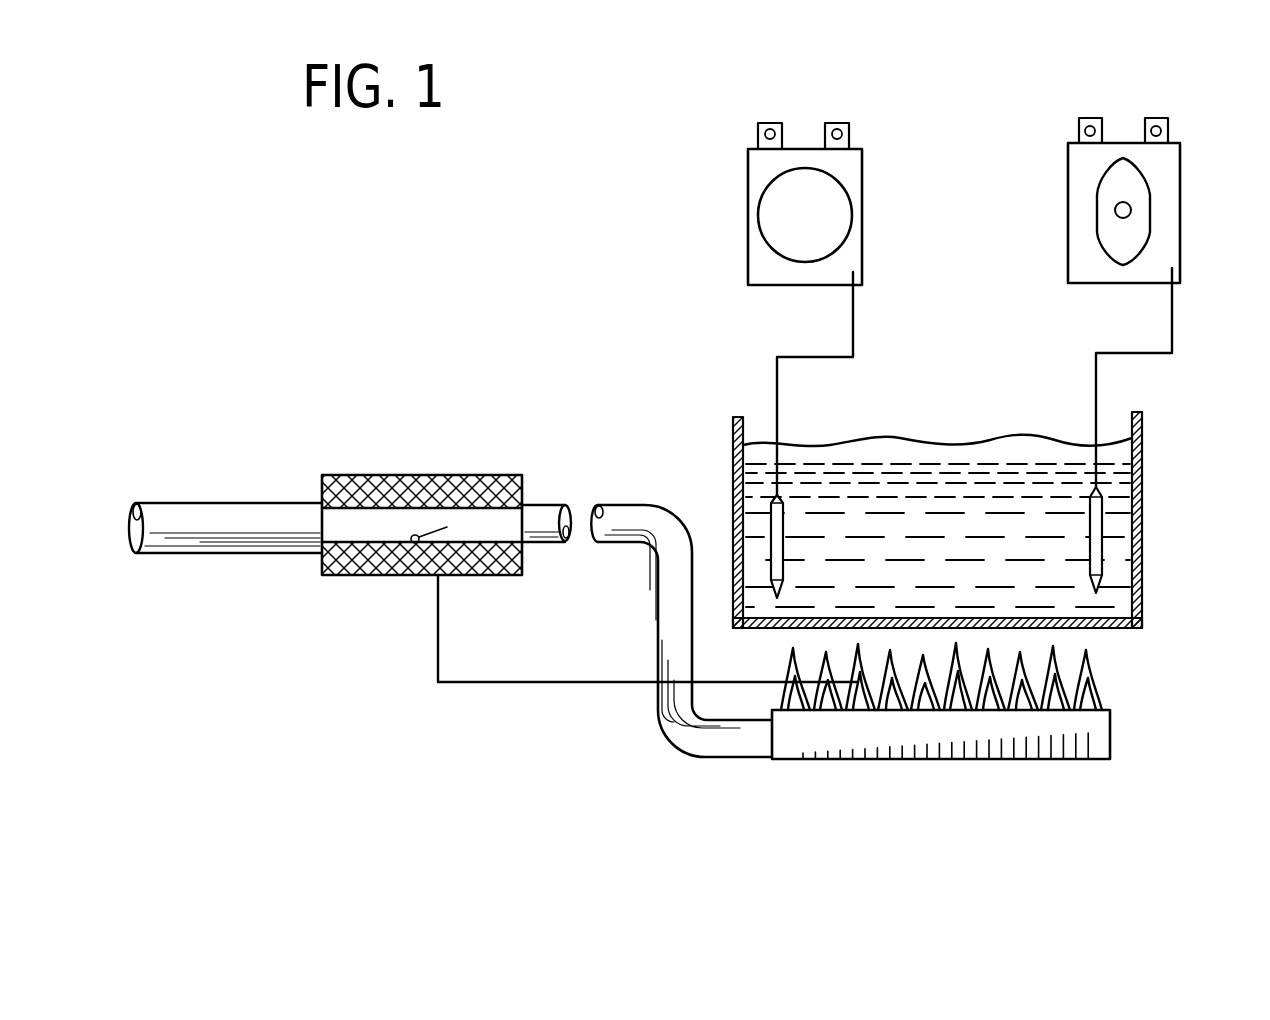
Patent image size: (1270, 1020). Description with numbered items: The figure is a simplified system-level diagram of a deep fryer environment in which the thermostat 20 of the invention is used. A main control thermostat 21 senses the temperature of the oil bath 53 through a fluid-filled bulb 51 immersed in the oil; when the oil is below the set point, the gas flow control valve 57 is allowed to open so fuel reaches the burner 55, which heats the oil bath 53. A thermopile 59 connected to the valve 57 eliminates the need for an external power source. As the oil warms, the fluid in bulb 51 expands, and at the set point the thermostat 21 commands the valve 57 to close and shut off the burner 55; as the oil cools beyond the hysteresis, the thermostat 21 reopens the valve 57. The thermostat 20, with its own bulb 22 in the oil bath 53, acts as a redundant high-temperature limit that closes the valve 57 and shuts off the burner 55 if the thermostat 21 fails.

The thermostat 20 is at (1180, 187).
The thermostat 21 is at (748, 160).
The bulb 22 is at (1087, 522).
The bulb 51 is at (787, 525).
The oil bath 53 is at (733, 472).
The burner 55 is at (1095, 733).
The gas flow control valve 57 is at (358, 475).
The thermopile 59 is at (532, 683).